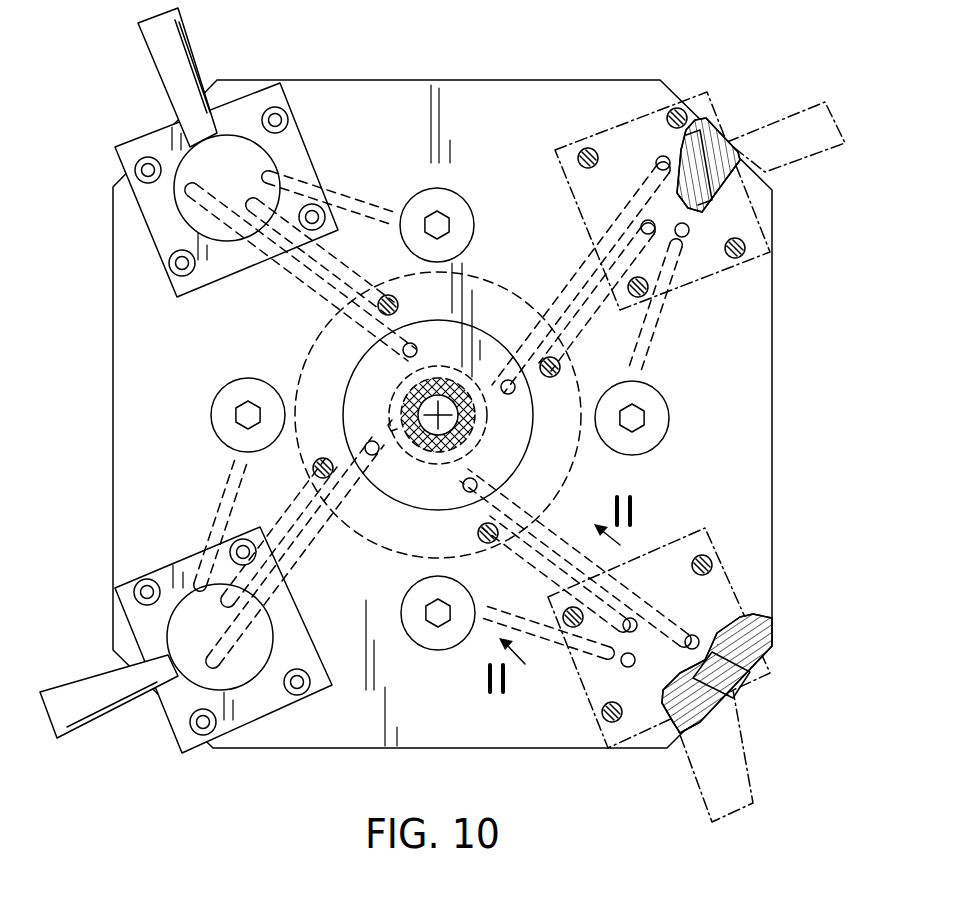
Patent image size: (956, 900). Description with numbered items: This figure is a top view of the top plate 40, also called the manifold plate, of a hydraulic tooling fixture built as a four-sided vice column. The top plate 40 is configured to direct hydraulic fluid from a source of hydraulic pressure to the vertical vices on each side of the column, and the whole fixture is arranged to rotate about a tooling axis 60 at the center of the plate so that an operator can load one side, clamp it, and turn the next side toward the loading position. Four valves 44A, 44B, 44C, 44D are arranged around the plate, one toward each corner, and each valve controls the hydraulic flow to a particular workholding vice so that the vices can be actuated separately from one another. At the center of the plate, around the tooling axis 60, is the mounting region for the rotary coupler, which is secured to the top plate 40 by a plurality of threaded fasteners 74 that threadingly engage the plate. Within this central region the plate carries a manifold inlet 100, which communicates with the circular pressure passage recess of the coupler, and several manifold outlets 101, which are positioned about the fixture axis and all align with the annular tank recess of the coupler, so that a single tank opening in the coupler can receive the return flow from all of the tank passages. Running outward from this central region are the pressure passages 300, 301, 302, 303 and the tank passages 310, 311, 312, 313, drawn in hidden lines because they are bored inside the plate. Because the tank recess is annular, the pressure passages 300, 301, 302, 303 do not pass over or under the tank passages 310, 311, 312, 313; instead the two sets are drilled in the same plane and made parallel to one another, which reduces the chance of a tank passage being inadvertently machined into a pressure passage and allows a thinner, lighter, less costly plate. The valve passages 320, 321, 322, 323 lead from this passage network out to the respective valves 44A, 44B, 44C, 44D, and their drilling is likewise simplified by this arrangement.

The top plate 40 is at (774, 391).
The valve 44A is at (260, 706).
The valve 44B is at (735, 580).
The valve 44C is at (622, 108).
The valve 44D is at (240, 105).
The tooling axis 60 is at (437, 434).
The fasteners 74 is at (386, 296).
The manifold inlet 100 is at (448, 412).
The manifold outlet 101 is at (412, 343).
The pressure passage 300 is at (565, 282).
The pressure passage 301 is at (565, 514).
The pressure passage 302 is at (310, 579).
The pressure passage 303 is at (284, 291).
The tank passage 310 is at (650, 317).
The tank passage 311 is at (448, 636).
The tank passage 312 is at (246, 512).
The tank passage 313 is at (301, 325).
The valve passage 320 is at (660, 352).
The valve passage 321 is at (548, 656).
The valve passage 322 is at (240, 470).
The valve passage 323 is at (356, 196).